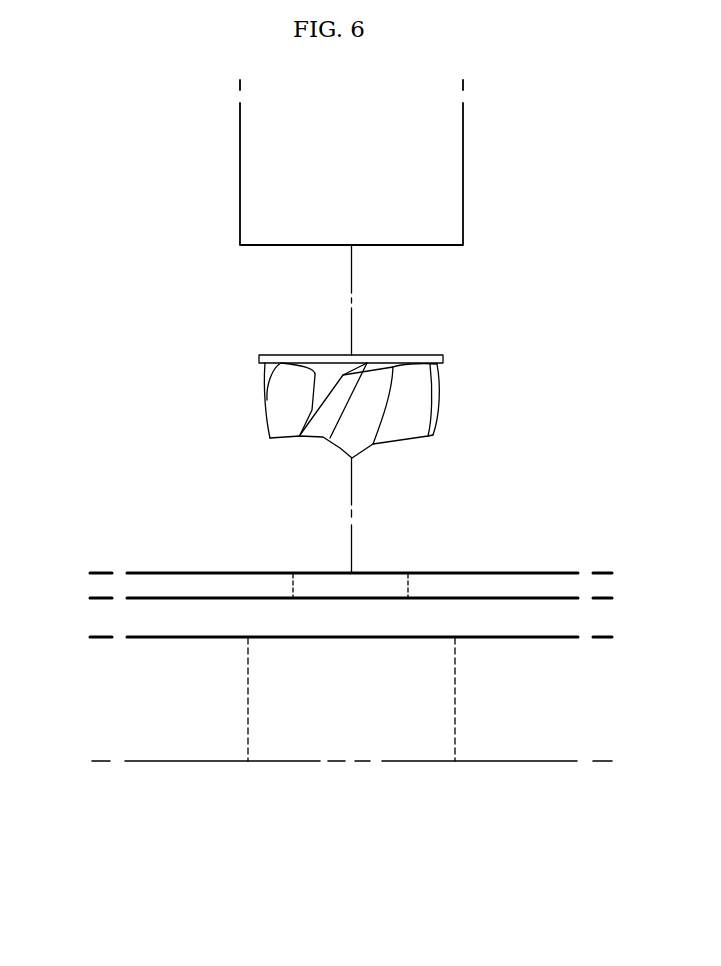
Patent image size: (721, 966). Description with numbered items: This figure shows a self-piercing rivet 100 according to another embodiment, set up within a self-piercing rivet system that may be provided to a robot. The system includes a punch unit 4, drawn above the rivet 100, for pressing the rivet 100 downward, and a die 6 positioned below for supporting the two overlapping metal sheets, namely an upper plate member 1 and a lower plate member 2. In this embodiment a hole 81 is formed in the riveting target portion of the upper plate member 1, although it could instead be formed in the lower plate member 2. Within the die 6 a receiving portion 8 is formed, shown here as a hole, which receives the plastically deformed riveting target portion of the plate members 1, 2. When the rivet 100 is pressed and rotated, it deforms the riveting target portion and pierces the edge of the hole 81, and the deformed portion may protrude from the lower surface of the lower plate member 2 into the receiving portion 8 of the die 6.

The punch unit 4 is at (240, 173).
The self-piercing rivet 100 is at (481, 390).
The upper plate member 1 is at (150, 578).
The hole 81 is at (408, 587).
The lower plate member 2 is at (150, 632).
The receiving portion 8 is at (455, 700).
The die 6 is at (283, 762).